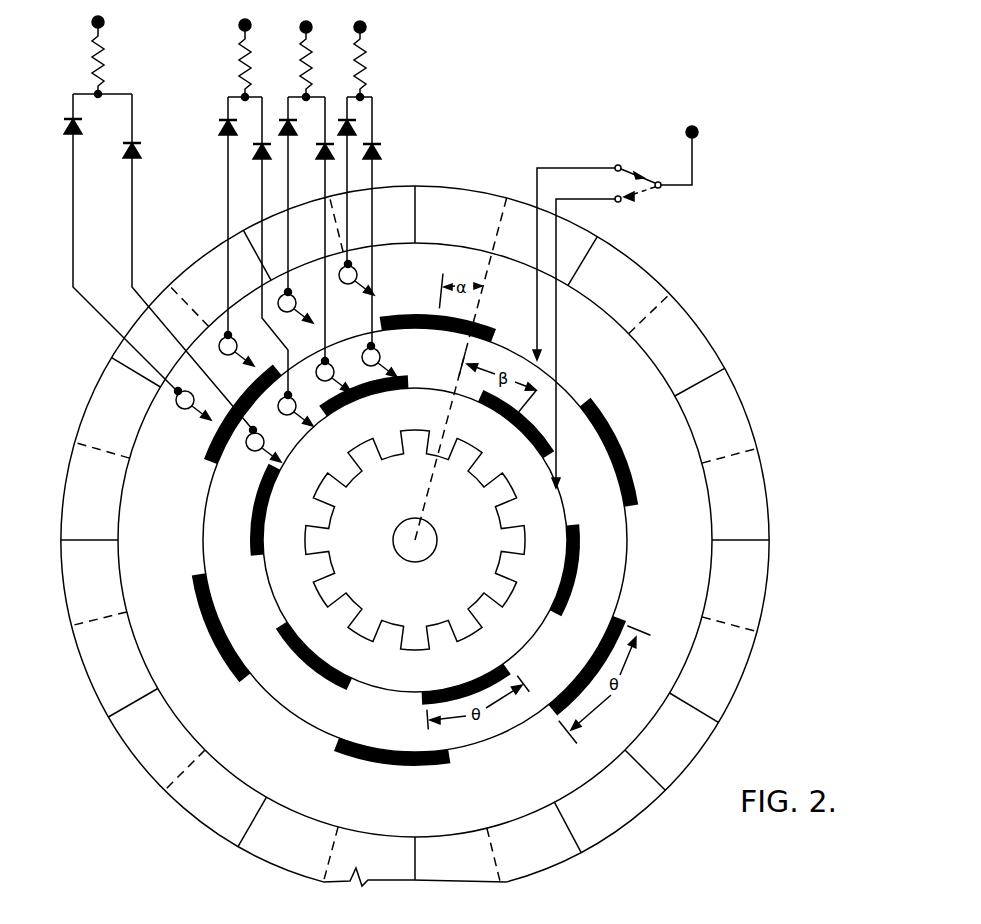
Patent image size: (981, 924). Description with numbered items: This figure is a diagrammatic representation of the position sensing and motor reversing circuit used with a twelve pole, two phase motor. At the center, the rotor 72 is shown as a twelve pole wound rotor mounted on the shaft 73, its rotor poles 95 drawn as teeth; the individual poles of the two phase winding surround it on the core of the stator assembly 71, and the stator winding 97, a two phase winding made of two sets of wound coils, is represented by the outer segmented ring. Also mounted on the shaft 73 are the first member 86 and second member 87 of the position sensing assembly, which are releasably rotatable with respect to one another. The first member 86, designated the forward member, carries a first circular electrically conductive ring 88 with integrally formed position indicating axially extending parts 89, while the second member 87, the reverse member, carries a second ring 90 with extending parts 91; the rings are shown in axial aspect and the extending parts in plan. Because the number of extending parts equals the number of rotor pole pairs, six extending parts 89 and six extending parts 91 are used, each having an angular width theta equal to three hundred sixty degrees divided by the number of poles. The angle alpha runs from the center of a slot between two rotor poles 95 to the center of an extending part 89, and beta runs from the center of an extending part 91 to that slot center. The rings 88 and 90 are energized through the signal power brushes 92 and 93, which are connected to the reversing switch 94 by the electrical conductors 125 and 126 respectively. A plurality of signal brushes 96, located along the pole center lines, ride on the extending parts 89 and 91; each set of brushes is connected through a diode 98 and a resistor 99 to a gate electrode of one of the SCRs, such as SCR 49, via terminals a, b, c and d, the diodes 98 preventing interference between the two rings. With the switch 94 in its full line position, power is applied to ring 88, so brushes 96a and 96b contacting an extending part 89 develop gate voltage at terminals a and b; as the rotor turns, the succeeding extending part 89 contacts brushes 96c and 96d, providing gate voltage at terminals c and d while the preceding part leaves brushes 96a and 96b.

The SCR 49 is at (697, 130).
The stator assembly 71 is at (62, 494).
The rotor 72 is at (437, 366).
The shaft 73 is at (415, 534).
The first member 86 is at (415, 540).
The second member 87 is at (415, 540).
The first circular electrically conductive ring 88 is at (563, 383).
The position indicating axially extending parts 89 is at (613, 440).
The second circular electrically conductive ring 90 is at (527, 663).
The position indicating axially extending parts 91 is at (579, 586).
The signal power brush 92 is at (541, 352).
The signal power brush 93 is at (559, 485).
The reversing switch 94 is at (638, 199).
The rotor poles 95 is at (440, 437).
The signal brushes 96 is at (186, 410).
The signal brush 96a is at (176, 401).
The signal brush 96b is at (221, 339).
The signal brush 96c is at (296, 304).
The signal brush 96d is at (358, 271).
The stator winding 97 is at (97, 668).
The diode 98 is at (64, 130).
The resistor 99 is at (104, 52).
The electrical conductor 125 is at (553, 150).
The electrical conductor 126 is at (560, 188).